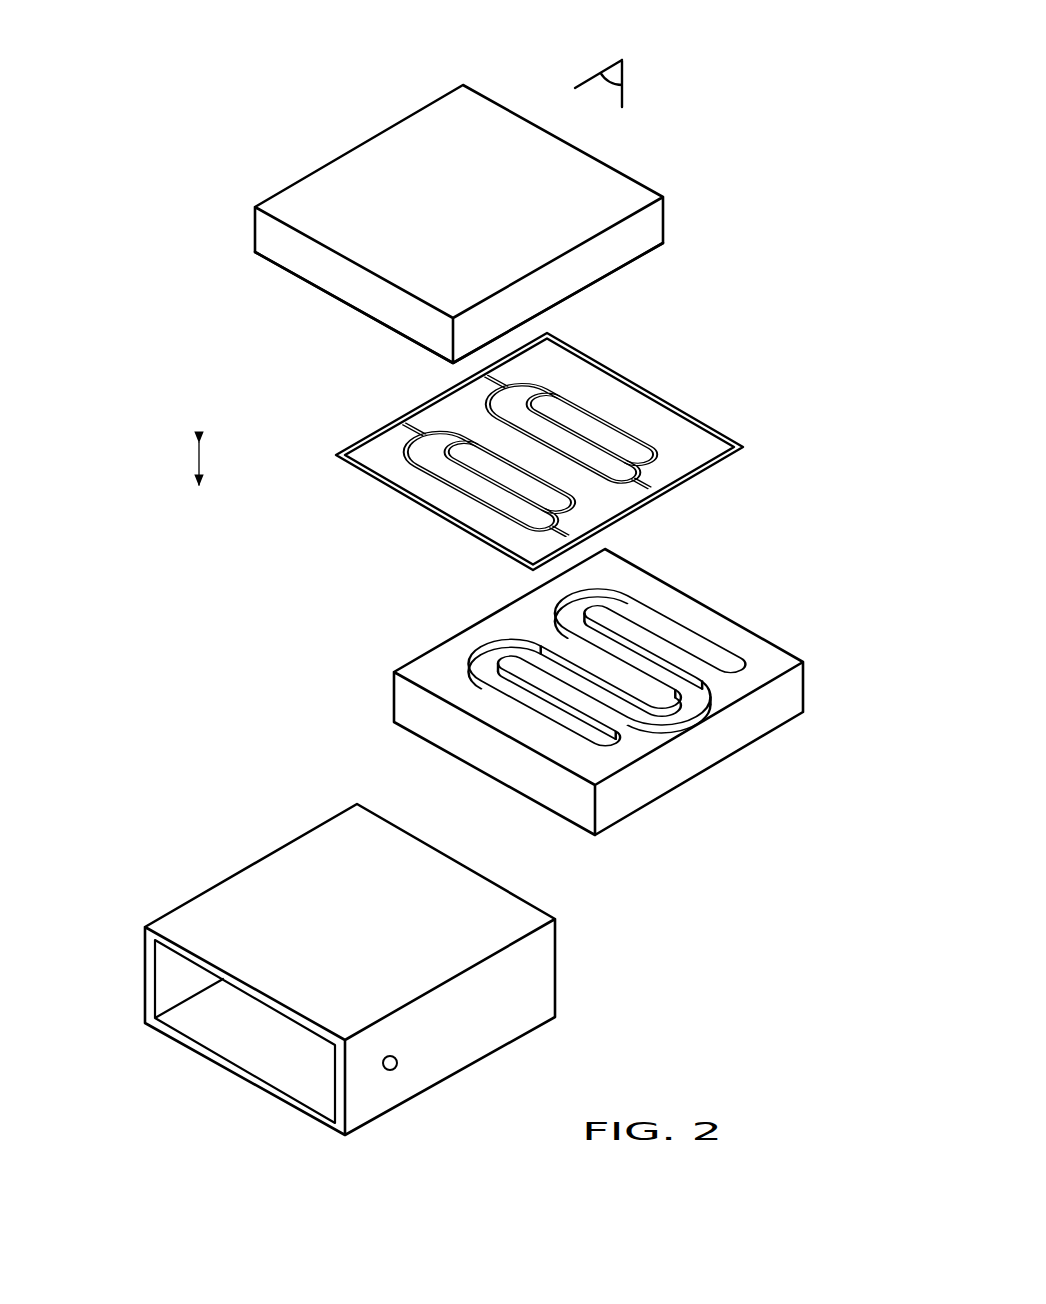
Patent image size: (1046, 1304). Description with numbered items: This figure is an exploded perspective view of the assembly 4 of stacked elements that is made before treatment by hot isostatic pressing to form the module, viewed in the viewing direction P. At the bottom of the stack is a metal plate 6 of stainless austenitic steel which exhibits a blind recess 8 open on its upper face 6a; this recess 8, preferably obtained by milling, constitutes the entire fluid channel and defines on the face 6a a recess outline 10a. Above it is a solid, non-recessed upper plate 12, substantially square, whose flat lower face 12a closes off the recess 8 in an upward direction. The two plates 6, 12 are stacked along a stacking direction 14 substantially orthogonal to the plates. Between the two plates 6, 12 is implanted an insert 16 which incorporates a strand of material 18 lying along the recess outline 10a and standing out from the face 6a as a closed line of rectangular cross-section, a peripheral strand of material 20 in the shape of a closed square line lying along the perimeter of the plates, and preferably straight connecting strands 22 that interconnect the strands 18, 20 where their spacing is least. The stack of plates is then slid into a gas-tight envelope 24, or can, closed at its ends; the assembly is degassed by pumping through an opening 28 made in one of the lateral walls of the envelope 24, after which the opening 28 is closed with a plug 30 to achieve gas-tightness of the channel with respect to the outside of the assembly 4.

The assembly 4 is at (131, 104).
The viewing direction P is at (612, 72).
The upper plate 12 is at (419, 136).
The flat lower face 12a is at (277, 269).
The stacking direction 14 is at (197, 462).
The insert 16 is at (345, 490).
The strand of material 18 is at (397, 420).
The peripheral strand of material 20 is at (367, 430).
The connecting strands 22 is at (483, 380).
The metal plate 6 is at (737, 737).
The upper face 6a is at (435, 667).
The recess 8 is at (697, 647).
The recess outline 10a is at (547, 712).
The gas-tight envelope 24 is at (252, 878).
The opening 28 is at (398, 1066).
The plug 30 is at (413, 1057).